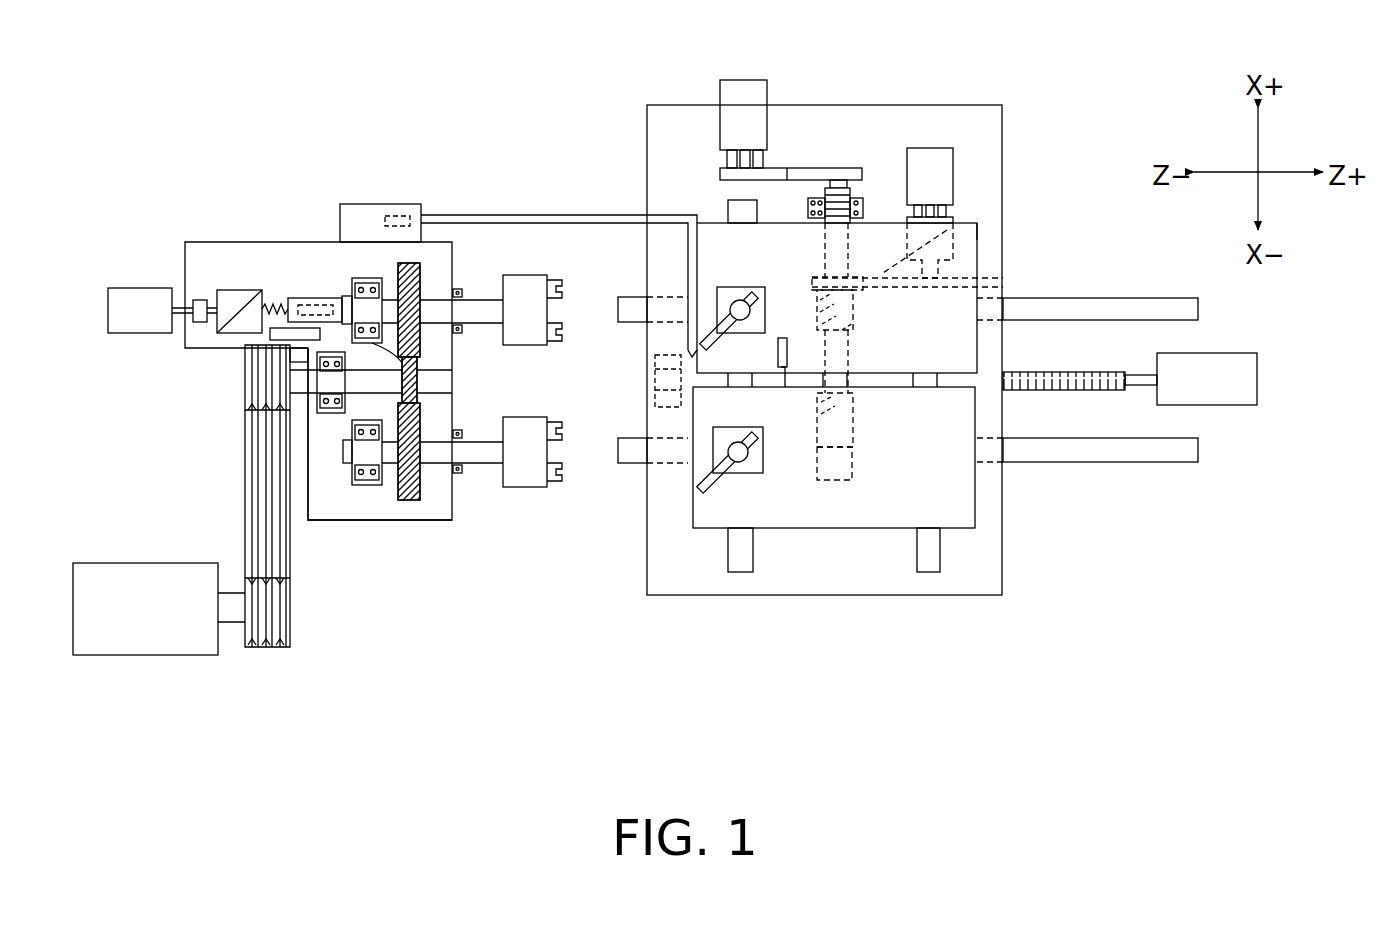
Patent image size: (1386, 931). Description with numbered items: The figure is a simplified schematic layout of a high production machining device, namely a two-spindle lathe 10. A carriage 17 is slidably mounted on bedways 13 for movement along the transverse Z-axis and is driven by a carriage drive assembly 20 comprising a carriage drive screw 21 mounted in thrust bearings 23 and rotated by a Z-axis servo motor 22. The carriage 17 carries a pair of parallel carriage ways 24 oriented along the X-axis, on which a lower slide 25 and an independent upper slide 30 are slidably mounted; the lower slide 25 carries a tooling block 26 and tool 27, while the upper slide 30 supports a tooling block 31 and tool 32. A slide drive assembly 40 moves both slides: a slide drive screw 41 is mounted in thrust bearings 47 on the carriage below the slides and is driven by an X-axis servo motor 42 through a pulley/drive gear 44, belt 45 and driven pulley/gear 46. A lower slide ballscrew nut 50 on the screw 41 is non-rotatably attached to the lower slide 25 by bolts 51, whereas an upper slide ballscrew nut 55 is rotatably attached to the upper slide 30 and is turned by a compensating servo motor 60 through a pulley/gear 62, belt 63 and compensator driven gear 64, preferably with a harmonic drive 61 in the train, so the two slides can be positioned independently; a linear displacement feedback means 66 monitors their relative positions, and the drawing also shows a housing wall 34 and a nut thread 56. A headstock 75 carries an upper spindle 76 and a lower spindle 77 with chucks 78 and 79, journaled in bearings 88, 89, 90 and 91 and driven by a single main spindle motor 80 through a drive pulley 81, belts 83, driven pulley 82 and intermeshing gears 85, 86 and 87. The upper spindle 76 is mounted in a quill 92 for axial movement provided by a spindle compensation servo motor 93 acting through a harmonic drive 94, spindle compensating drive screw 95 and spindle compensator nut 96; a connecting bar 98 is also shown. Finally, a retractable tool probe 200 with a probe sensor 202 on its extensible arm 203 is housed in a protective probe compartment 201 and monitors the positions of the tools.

The two-spindle lathe 10 is at (505, 137).
The bedways 13 is at (1190, 300).
The carriage 17 is at (993, 153).
The carriage drive assembly 20 is at (1218, 345).
The carriage drive screw 21 is at (1090, 372).
The Z-axis servo motor 22 is at (1232, 396).
The thrust bearings 23 is at (648, 410).
The carriage ways 24 is at (742, 555).
The lower slide 25 is at (886, 517).
The tooling block 26 is at (747, 467).
The tool 27 is at (697, 475).
The upper slide 30 is at (968, 358).
The tooling block 31 is at (745, 290).
The tool 32 is at (713, 345).
The housing top wall 34 is at (977, 223).
The slide drive assembly 40 is at (855, 125).
The slide drive screw 41 is at (846, 192).
The X-axis servo motor 42 is at (738, 88).
The pulley/drive gear 44 is at (720, 177).
The belt 45 is at (788, 170).
The driven pulley/gear 46 is at (837, 168).
The thrust bearings 47 is at (808, 207).
The lower slide ballscrew nut 50 is at (880, 432).
The bolts 51 is at (853, 400).
The upper slide ballscrew nut 55 is at (813, 307).
The nut thread 56 is at (853, 323).
The compensating servo motor 60 is at (928, 158).
The harmonic drive 61 is at (955, 250).
The pulley/gear 62 is at (1003, 287).
The belt 63 is at (912, 262).
The compensator driven gear 64 is at (855, 305).
The linear displacement feedback means 66 is at (797, 352).
The headstock 75 is at (392, 514).
The upper spindle 76 is at (530, 280).
The lower spindle 77 is at (528, 488).
The work piece holder/chuck 78 is at (560, 342).
The work piece holder/chuck 79 is at (563, 478).
The main spindle motor 80 is at (190, 642).
The drive pulley 81 is at (282, 612).
The driven pulley 82 is at (248, 400).
The belts 83 is at (250, 500).
The gear 85 is at (418, 395).
The gear 86 is at (458, 257).
The gear 87 is at (420, 500).
The bearing 88 is at (372, 486).
The bearing 89 is at (458, 473).
The bearing 90 is at (452, 370).
The bearing 91 is at (462, 292).
The quill 92 is at (345, 255).
The spindle compensation servo motor 93 is at (124, 325).
The harmonic drive 94 is at (237, 290).
The spindle compensating drive screw 95 is at (276, 303).
The spindle compensator nut 96 is at (305, 298).
The connecting bar 98 is at (283, 341).
The retractable tool probe 200 is at (543, 212).
The protective probe compartment 201 is at (352, 206).
The probe sensor 202 is at (686, 345).
The extensible arm 203 is at (433, 215).